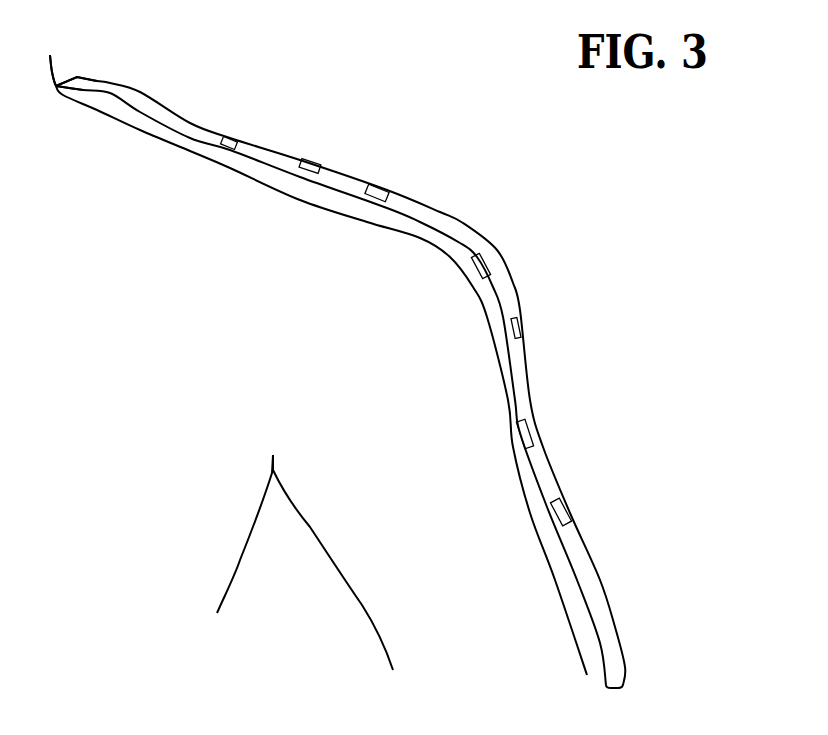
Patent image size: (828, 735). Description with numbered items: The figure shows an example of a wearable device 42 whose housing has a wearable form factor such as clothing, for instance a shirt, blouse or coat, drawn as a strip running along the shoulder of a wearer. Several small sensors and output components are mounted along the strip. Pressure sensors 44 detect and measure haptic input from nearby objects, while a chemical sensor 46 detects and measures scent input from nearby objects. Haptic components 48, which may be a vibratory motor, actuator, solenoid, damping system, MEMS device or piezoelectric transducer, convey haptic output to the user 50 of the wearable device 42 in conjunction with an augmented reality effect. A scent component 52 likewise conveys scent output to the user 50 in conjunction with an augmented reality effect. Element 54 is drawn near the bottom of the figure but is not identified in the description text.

The wearable device 42 is at (152, 103).
The pressure sensors 44 is at (520, 323).
The chemical sensors 46 is at (313, 161).
The haptic components 48 is at (383, 191).
The user 50 is at (50, 63).
The scent components 52 is at (230, 137).
The ear portion 54 is at (313, 595).